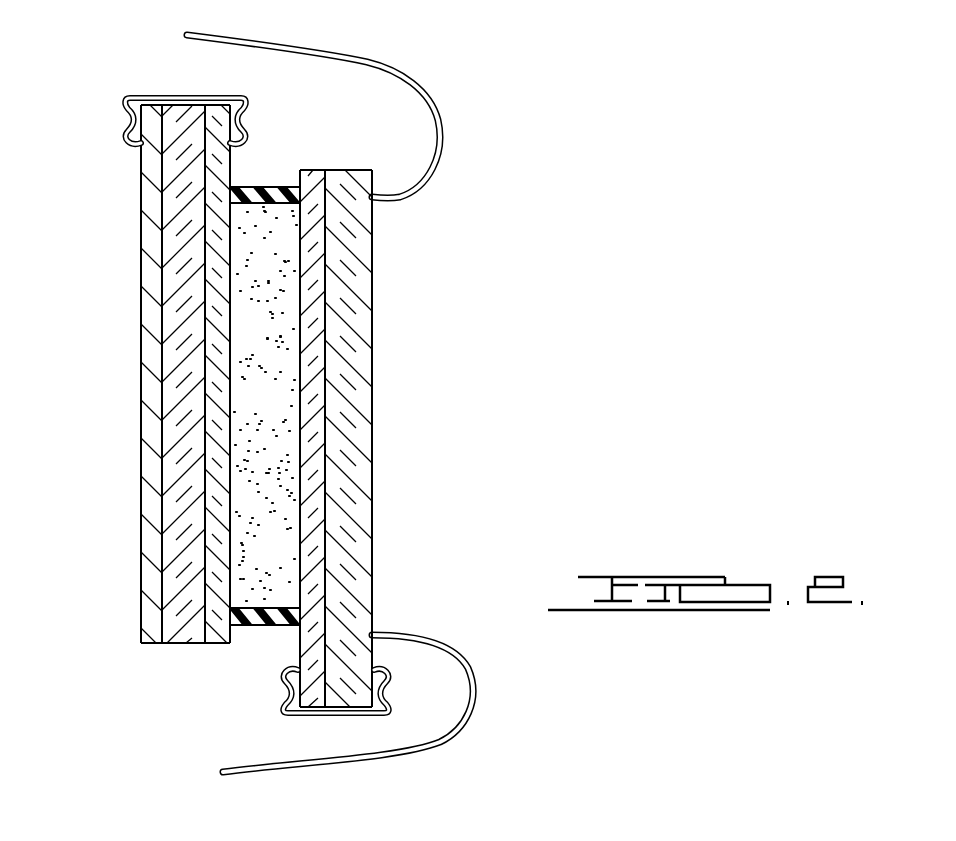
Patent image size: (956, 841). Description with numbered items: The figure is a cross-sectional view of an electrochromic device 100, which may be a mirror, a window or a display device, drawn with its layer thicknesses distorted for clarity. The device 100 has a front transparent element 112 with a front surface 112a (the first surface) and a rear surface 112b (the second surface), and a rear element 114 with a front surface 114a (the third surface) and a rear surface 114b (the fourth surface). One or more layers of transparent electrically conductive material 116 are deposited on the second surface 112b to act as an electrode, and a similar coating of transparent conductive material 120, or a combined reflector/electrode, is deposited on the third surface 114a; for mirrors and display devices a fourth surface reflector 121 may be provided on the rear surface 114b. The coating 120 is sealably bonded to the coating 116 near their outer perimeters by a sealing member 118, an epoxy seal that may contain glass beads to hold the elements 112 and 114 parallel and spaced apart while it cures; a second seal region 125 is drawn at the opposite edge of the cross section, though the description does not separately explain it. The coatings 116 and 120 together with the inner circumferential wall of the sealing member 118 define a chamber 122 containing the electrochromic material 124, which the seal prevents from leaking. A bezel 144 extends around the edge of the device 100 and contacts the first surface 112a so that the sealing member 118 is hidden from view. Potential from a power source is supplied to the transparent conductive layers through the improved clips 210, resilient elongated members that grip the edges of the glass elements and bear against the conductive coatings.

The electrochromic device 100 is at (108, 744).
The front transparent element 112 is at (405, 438).
The front surface of the front transparent element 112a is at (372, 368).
The rear surface of the front transparent element 112b is at (322, 260).
The rear element 114 is at (165, 404).
The front surface of the rear element 114a is at (205, 253).
The rear surface of the rear element 114b is at (163, 232).
The transparent electrically conductive material 116 is at (315, 548).
The sealing member 118 is at (271, 192).
The transparent conductive material coating on the third surface 120 is at (218, 625).
The fourth surface reflector 121 is at (150, 628).
The chamber 122 is at (285, 409).
The electrochromic material 124 is at (283, 470).
The lower sealant 125 is at (272, 608).
The bezel 144 is at (425, 100).
The clip 210 is at (262, 100).